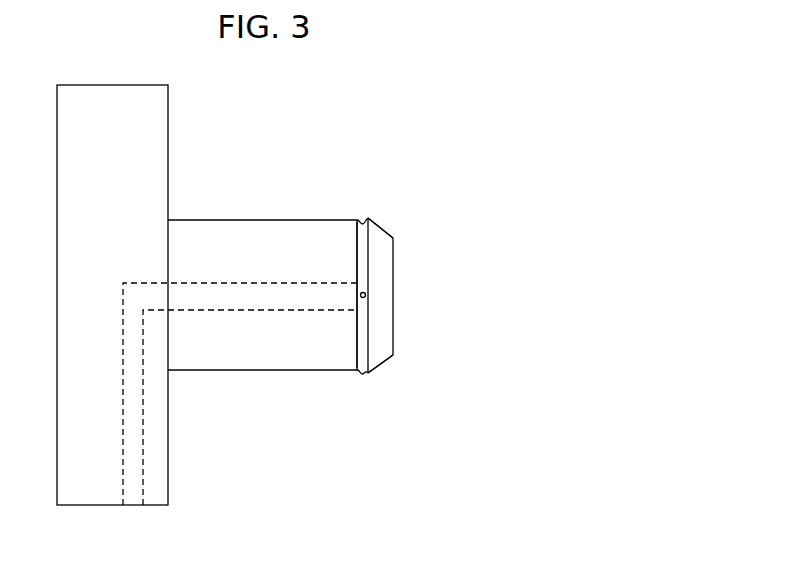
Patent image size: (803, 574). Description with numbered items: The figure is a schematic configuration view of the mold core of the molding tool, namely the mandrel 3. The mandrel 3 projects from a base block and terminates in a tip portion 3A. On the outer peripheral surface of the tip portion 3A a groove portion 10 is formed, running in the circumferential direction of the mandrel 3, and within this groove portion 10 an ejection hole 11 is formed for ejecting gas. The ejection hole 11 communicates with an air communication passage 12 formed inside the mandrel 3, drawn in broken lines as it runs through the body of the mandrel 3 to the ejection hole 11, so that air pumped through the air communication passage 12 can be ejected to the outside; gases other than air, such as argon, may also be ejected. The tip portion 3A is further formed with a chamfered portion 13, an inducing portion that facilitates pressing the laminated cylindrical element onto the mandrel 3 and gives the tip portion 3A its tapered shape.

The mandrel 3 is at (293, 212).
The tip portion 3A is at (384, 210).
The groove portion 10 is at (361, 257).
The ejection hole 11 is at (360, 295).
The air communication passage 12 is at (210, 283).
The chamfered portion 13 is at (383, 224).